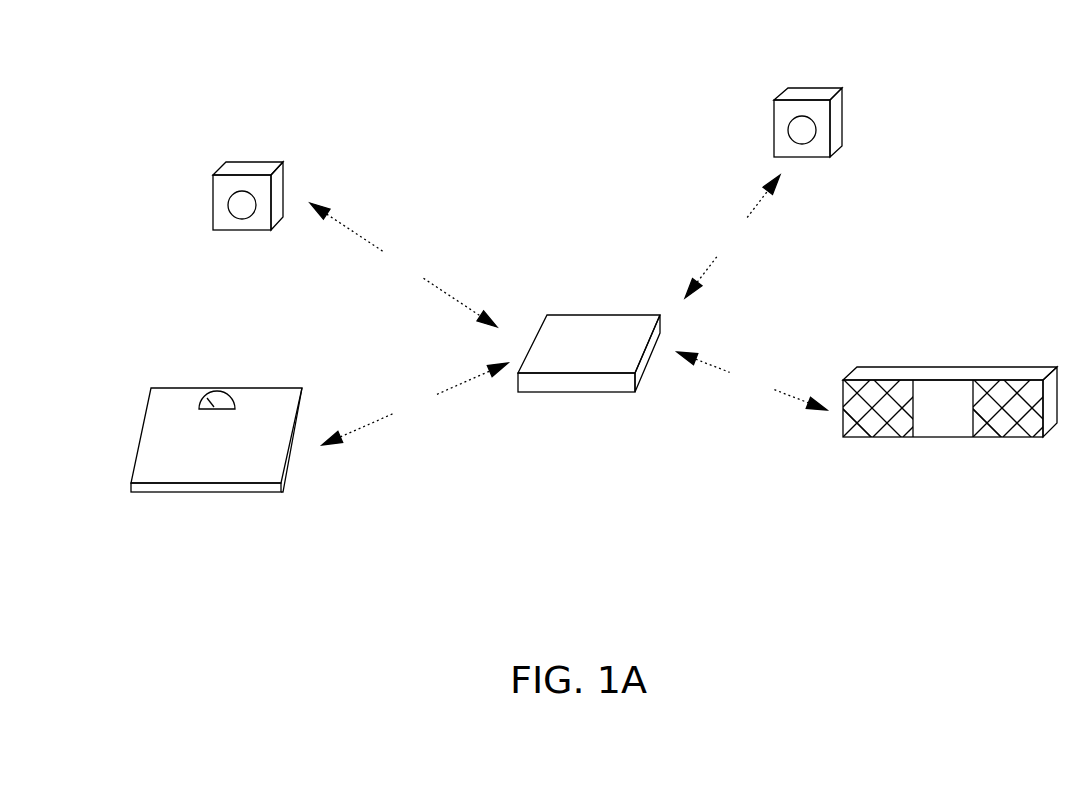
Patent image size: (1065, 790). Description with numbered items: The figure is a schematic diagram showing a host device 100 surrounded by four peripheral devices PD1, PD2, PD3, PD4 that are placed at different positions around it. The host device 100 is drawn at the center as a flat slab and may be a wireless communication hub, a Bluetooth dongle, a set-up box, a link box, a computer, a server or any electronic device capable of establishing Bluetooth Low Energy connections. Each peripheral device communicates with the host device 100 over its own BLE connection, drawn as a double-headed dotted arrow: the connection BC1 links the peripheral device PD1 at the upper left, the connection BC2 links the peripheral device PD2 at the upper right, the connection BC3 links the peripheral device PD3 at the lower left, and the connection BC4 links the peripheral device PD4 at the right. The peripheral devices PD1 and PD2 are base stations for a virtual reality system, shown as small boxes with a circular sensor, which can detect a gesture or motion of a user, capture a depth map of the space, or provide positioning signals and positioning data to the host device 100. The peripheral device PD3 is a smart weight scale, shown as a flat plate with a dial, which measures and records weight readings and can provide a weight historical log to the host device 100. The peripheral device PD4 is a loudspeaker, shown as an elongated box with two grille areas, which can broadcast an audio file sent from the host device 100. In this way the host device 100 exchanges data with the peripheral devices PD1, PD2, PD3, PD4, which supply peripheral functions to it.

The host device 100 is at (592, 315).
The peripheral device PD1 is at (252, 162).
The peripheral device PD2 is at (810, 88).
The peripheral device PD3 is at (287, 388).
The peripheral device PD4 is at (975, 367).
The BLE connection BC1 is at (403, 265).
The BLE connection BC2 is at (732, 236).
The BLE connection BC3 is at (415, 404).
The BLE connection BC4 is at (752, 381).